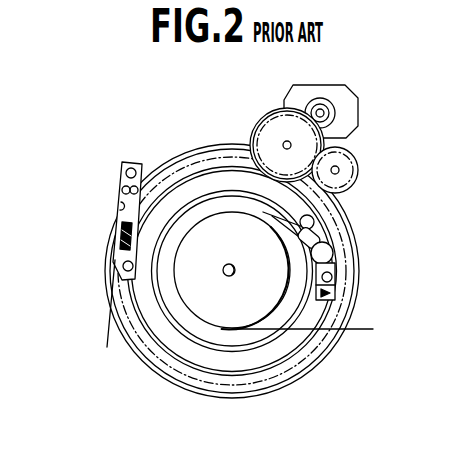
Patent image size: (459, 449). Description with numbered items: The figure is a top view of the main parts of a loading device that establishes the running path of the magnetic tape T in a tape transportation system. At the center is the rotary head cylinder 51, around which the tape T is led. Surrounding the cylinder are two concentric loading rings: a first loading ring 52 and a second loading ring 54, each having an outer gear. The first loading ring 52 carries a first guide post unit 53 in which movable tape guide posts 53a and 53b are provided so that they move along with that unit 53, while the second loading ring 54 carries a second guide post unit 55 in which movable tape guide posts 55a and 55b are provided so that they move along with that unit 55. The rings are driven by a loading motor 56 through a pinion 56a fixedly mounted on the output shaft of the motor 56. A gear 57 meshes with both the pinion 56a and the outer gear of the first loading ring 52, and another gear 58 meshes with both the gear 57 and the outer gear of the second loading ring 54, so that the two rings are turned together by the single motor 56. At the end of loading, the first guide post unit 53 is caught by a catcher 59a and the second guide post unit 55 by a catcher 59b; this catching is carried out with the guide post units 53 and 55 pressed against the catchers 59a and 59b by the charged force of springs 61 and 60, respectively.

The rotary head cylinder 51 is at (205, 308).
The first loading ring 52 is at (228, 365).
The second loading ring 54 is at (260, 383).
The first guide post unit 53 is at (318, 238).
The movable tape guide post 53a is at (333, 257).
The movable tape guide post 53b is at (312, 214).
The second guide post unit 55 is at (118, 233).
The movable tape guide post 55a is at (340, 211).
The movable tape guide post 55b is at (118, 208).
The loading motor 56 is at (350, 102).
The pinion 56a is at (327, 121).
The gear 57 is at (262, 134).
The gear 58 is at (348, 178).
The catcher 59a is at (338, 283).
The catcher 59b is at (133, 162).
The spring 60 is at (112, 257).
The spring 61 is at (338, 305).
The magnetic tape T is at (357, 334).